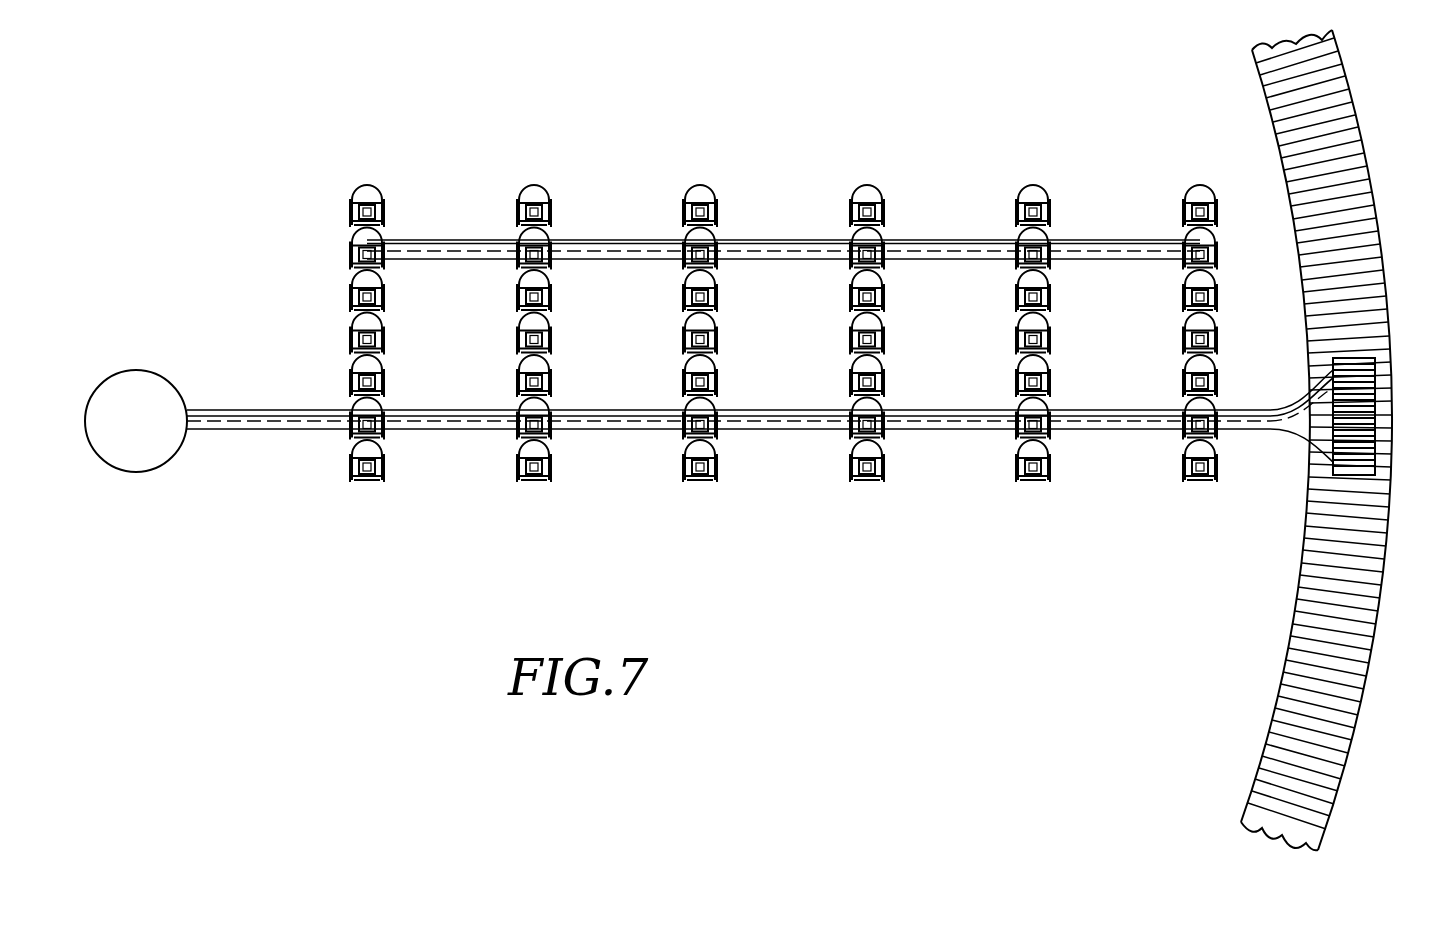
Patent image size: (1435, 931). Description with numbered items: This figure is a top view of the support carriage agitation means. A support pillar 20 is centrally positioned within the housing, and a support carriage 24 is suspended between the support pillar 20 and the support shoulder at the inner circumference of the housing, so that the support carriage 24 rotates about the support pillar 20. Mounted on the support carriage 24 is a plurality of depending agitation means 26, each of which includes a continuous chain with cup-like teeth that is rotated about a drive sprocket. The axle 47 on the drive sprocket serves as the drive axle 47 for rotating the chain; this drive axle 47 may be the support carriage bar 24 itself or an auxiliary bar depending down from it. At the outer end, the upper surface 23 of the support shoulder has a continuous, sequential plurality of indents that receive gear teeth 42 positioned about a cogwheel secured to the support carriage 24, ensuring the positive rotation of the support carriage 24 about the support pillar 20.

The support pillar 20 is at (140, 455).
The drive axle 47 is at (277, 423).
The support carriage 24 is at (778, 425).
The agitation means 26 is at (364, 187).
The gear teeth 42 is at (1357, 375).
The upper surface 23 is at (1340, 567).